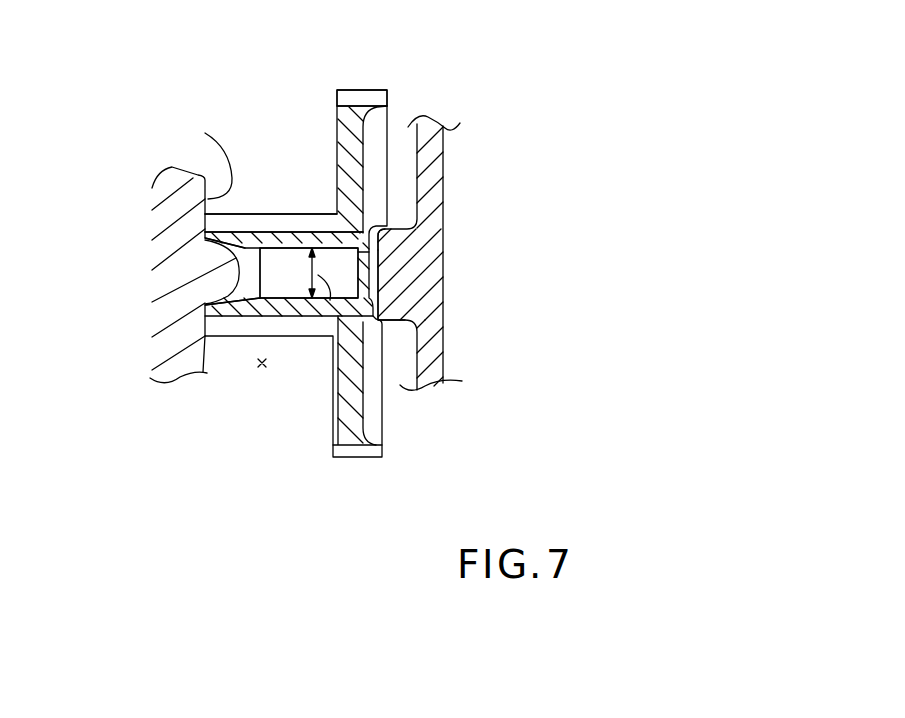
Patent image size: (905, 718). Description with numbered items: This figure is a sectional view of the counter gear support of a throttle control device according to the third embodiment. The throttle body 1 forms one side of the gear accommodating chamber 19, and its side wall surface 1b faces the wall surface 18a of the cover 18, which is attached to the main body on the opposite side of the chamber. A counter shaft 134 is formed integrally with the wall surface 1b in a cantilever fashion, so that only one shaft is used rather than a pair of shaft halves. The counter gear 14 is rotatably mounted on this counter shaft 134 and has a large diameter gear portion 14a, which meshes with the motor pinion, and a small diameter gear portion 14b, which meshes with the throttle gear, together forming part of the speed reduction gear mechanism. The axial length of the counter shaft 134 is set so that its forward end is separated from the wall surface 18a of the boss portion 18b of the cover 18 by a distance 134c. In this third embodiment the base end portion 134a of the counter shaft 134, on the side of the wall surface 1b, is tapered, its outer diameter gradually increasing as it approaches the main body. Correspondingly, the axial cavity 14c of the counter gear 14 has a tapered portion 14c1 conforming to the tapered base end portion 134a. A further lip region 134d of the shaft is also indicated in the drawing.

The throttle body 1 is at (174, 301).
The side wall surface 1b is at (205, 133).
The counter gear 14 is at (331, 113).
The large diameter gear portion 14a is at (360, 97).
The small diameter gear portion 14b is at (317, 222).
The axial cavity 14c is at (281, 287).
The tapered portion 14c1 is at (205, 291).
The counter shaft 134 is at (284, 252).
The base end portion 134a is at (247, 290).
The distance 134c is at (379, 255).
The seal lip portion 134d is at (331, 315).
The cover 18 is at (437, 360).
The wall surface 18a is at (376, 226).
The boss portion 18b is at (390, 238).
The gear accommodating chamber 19 is at (262, 367).